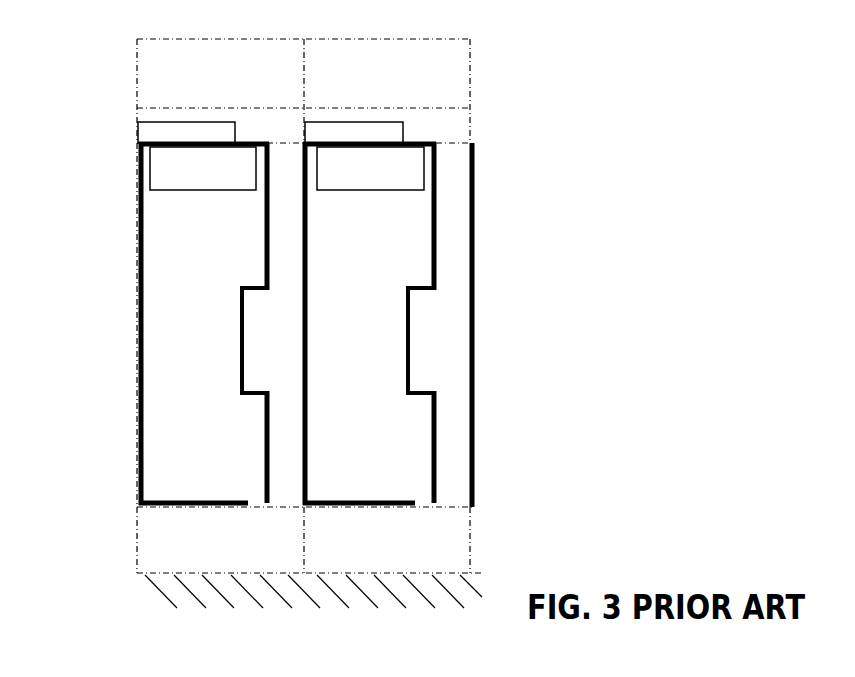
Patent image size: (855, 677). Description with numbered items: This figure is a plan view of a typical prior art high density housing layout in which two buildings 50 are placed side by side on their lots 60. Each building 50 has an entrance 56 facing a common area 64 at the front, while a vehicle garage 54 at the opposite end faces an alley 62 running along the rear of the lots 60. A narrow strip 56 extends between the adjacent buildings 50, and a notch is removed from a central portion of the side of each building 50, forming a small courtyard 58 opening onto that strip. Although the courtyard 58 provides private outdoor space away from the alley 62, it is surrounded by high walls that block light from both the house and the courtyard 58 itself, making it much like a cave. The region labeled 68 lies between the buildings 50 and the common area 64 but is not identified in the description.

The building 50 is at (287, 324).
The vehicle garage 54 is at (281, 156).
The entrance 56 is at (260, 503).
The courtyard 58 is at (258, 342).
The lot 60 is at (130, 342).
The alley 62 is at (285, 82).
The common area 64 is at (165, 594).
The lower clearance region 68 is at (187, 540).